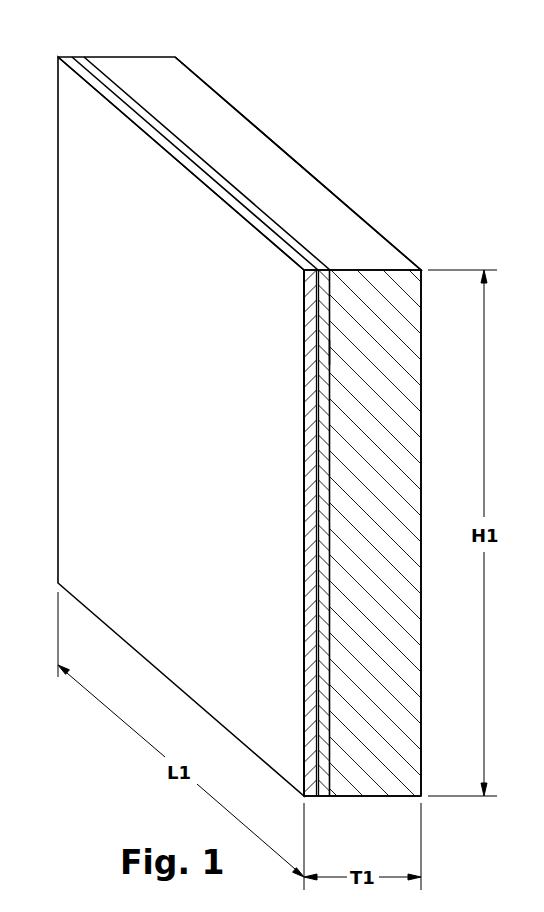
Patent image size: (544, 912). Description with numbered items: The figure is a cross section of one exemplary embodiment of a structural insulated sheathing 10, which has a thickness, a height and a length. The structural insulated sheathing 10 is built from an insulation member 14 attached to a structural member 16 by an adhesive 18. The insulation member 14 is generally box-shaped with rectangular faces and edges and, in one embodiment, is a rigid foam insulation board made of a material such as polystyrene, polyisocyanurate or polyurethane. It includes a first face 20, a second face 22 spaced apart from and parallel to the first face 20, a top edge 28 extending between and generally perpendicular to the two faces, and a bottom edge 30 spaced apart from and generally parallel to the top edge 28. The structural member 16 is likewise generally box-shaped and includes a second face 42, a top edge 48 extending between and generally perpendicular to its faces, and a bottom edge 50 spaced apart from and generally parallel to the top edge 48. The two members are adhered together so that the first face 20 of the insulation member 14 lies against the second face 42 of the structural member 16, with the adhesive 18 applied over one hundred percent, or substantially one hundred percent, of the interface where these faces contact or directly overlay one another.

The structural insulated sheathing 10 is at (78, 43).
The insulation member 14 is at (389, 252).
The structural member 16 is at (322, 240).
The adhesive 18 is at (325, 267).
The first face 20 is at (328, 352).
The second face 22 is at (422, 517).
The top edge 28 is at (297, 185).
The bottom edge 30 is at (372, 797).
The second face 42 is at (320, 383).
The top edge 48 is at (198, 173).
The bottom edge 50 is at (312, 797).